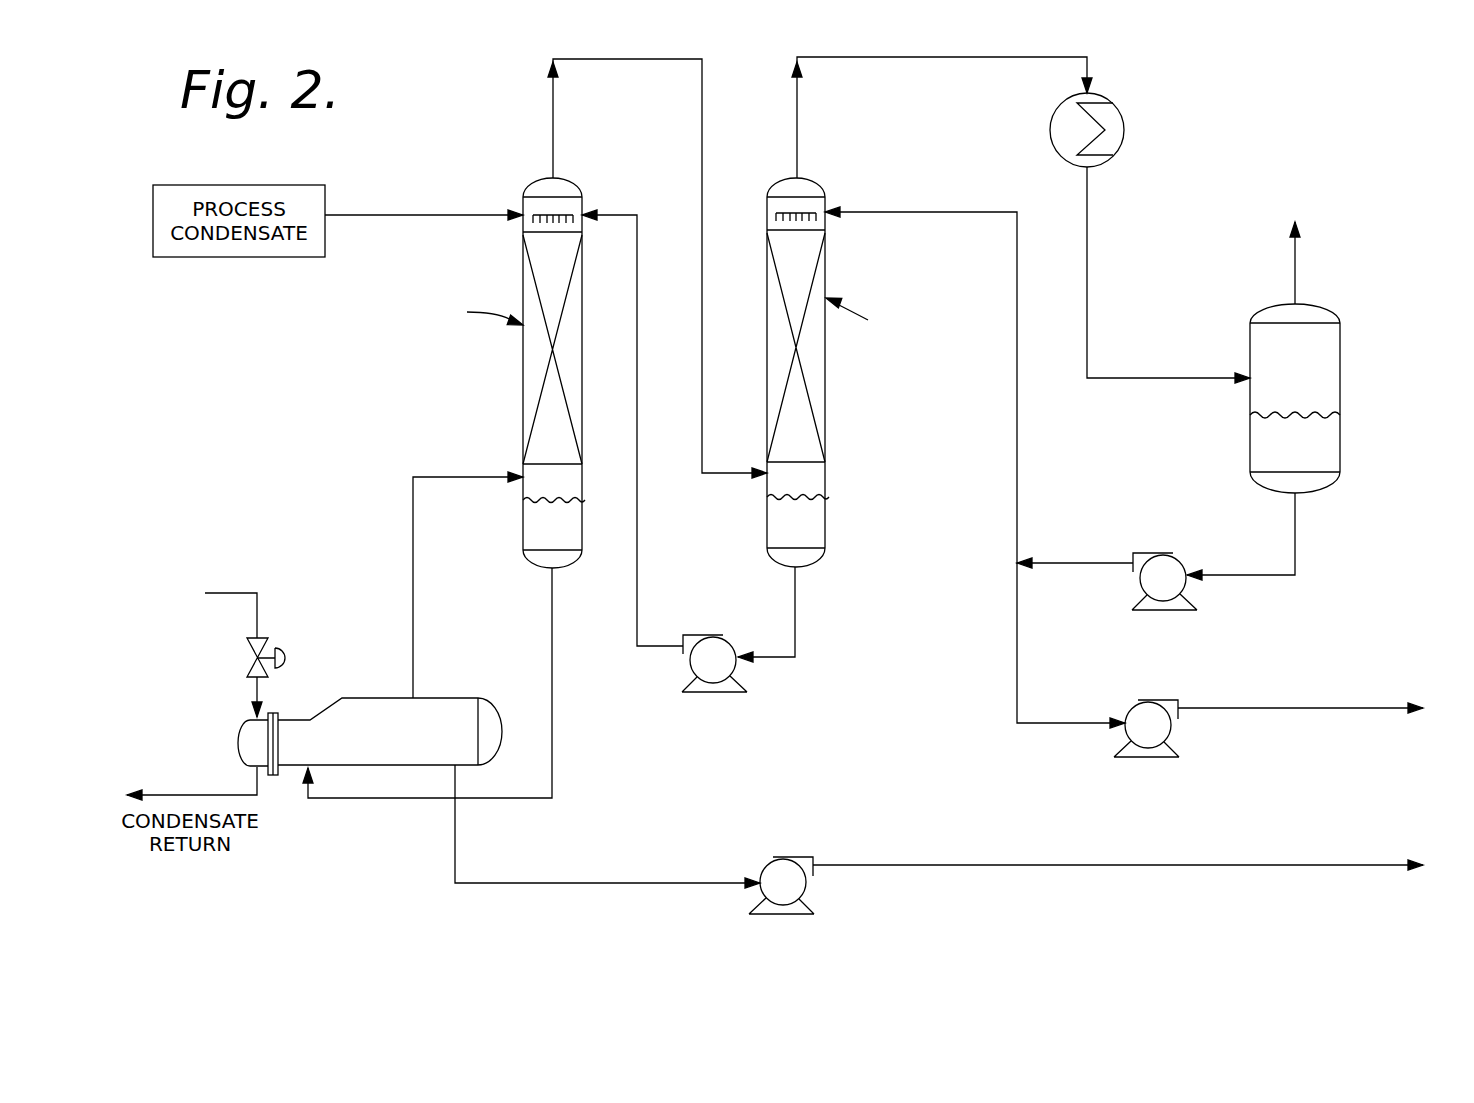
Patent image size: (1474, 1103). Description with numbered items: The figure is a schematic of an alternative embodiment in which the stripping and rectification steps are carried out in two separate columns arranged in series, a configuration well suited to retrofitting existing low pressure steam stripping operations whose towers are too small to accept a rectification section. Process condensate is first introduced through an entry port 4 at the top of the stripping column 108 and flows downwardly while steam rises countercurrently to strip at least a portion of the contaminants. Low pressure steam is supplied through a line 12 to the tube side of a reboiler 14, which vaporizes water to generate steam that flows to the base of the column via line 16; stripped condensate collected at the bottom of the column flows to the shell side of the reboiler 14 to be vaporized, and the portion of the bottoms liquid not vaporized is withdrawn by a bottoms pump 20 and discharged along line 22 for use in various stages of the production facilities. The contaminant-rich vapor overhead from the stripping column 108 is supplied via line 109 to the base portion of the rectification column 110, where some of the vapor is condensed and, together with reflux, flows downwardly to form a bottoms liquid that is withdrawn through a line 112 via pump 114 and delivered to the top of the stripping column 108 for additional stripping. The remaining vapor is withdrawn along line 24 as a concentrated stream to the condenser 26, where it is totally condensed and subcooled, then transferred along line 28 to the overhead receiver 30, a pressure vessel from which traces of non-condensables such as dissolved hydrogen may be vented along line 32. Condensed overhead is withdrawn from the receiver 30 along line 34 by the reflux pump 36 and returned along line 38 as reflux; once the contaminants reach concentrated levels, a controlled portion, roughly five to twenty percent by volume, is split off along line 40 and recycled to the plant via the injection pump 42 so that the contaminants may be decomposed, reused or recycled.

The entry port 4 is at (523, 212).
The line 12 is at (257, 590).
The reboiler 14 is at (448, 700).
The line 16 is at (480, 478).
The bottoms pump 20 is at (808, 905).
The line 22 is at (875, 864).
The line 24 is at (870, 57).
The condenser 26 is at (1124, 130).
The line 28 is at (1087, 255).
The overhead receiver 30 is at (1340, 445).
The line 32 is at (1294, 263).
The line 34 is at (1233, 578).
The reflux pump 36 is at (1143, 597).
The line 38 is at (1017, 440).
The line 40 is at (1010, 662).
The injection pump 42 is at (1175, 750).
The stripping column 108 is at (523, 378).
The line 109 is at (663, 60).
The rectification column 110 is at (825, 403).
The line 112 is at (795, 617).
The pump 114 is at (725, 693).